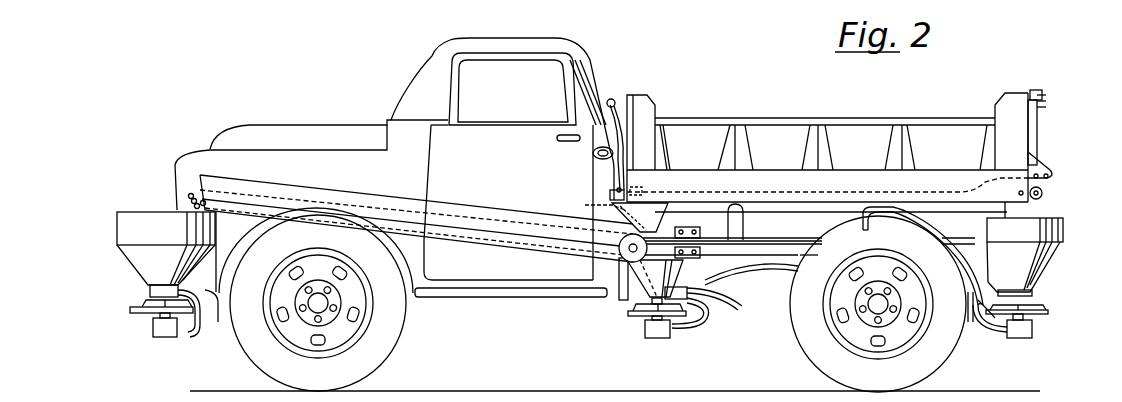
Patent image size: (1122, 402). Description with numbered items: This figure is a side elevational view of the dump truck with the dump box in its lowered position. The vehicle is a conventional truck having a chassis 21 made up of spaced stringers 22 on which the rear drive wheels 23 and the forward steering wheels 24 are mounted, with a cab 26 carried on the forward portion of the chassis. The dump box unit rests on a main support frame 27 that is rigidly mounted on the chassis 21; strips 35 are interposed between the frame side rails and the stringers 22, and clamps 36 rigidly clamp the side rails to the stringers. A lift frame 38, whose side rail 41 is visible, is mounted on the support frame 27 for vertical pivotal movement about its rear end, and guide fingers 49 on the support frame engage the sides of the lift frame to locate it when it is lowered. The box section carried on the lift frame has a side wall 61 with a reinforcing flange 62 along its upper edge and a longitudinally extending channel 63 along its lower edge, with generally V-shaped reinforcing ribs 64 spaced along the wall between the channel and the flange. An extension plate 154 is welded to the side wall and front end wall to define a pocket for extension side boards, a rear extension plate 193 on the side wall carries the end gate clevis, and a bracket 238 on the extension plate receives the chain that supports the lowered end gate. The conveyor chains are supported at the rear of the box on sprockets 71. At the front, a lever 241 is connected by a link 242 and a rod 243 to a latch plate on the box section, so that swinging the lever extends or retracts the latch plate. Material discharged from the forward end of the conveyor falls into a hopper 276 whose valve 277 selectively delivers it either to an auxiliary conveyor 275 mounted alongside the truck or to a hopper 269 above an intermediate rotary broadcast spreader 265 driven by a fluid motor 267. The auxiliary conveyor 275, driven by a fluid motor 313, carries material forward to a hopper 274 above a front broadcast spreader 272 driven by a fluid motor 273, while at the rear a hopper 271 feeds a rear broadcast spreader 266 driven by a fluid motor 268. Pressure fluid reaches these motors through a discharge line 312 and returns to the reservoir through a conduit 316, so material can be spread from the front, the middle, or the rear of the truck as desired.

The cab 26 is at (583, 47).
The forward steering wheels 24 is at (390, 330).
The rear drive wheels 23 is at (952, 338).
The lift frame 38 is at (956, 213).
The main support frame 27 is at (840, 227).
The stringers 22 is at (772, 248).
The strips 35 is at (722, 243).
The clamps 36 is at (700, 252).
The guide fingers 49 is at (738, 236).
The chassis 21 is at (741, 268).
The side wall 61 is at (860, 125).
The reinforcing flange 62 is at (742, 120).
The reinforcing ribs 64 is at (740, 153).
The channel 63 is at (845, 176).
The rod 243 is at (765, 190).
The extension plate 154 is at (650, 105).
The lever 241 is at (617, 100).
The link 242 is at (638, 187).
The hopper 276 is at (658, 199).
The valve 277 is at (591, 205).
The bracket 238 is at (1022, 112).
The rear extension plate 193 is at (1022, 110).
The sprockets 71 is at (1044, 194).
The side rail 41 is at (1010, 210).
The hopper 271 is at (1065, 264).
The spreader 266 is at (1053, 306).
The fluid motor 268 is at (1034, 332).
The hopper 269 is at (635, 278).
The spreader 265 is at (633, 322).
The fluid motor 267 is at (660, 330).
The discharge line 312 is at (700, 306).
The conduit 316 is at (702, 331).
The hopper 274 is at (117, 228).
The spreader 272 is at (126, 309).
The fluid motor 273 is at (155, 334).
The auxiliary conveyor 275 is at (462, 198).
The fluid motor 313 is at (625, 258).